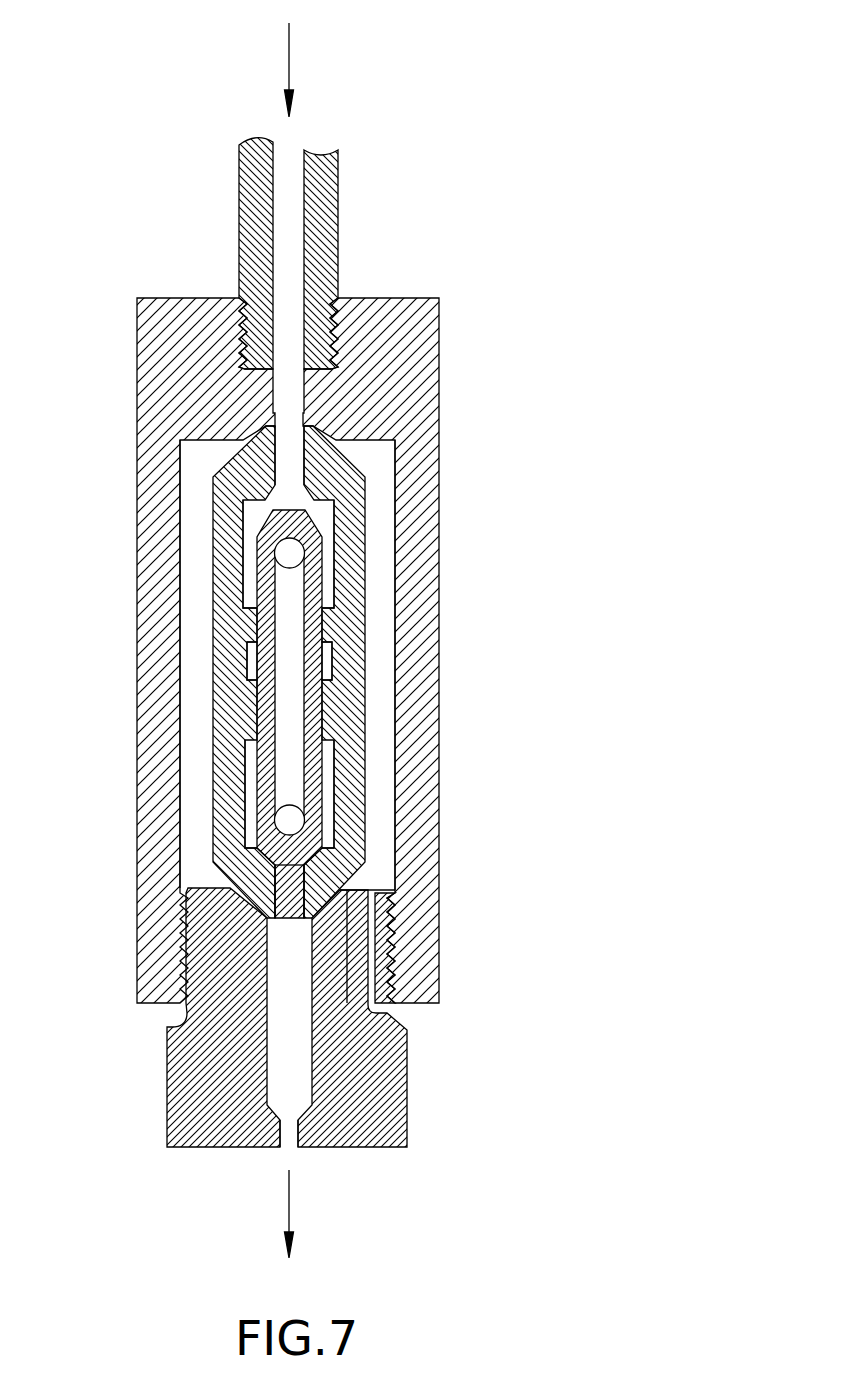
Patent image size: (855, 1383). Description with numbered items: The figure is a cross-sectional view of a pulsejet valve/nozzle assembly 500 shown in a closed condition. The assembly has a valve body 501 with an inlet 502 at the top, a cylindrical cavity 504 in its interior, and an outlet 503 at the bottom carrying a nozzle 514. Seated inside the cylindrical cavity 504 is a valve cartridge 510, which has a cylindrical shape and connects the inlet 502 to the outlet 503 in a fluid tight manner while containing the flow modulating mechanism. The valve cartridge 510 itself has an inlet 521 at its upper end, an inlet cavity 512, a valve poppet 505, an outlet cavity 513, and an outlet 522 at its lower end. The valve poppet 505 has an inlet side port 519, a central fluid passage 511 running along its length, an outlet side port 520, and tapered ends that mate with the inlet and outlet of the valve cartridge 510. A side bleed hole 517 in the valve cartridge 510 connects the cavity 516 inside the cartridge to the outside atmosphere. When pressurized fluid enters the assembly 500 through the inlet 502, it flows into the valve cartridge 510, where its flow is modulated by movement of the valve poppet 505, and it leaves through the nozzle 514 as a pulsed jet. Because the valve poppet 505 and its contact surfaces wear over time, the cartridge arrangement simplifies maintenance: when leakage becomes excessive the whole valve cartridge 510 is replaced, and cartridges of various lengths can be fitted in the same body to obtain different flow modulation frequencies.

The pulsejet valve/nozzle assembly 500 is at (412, 124).
The valve body 501 is at (417, 312).
The inlet 502 is at (288, 152).
The outlet 503 is at (383, 1078).
The cylindrical cavity 504 is at (385, 712).
The valve poppet 505 is at (313, 587).
The valve cartridge 510 is at (338, 466).
The central fluid passage 511 is at (290, 712).
The inlet cavity 512 is at (323, 511).
The outlet cavity 513 is at (325, 795).
The nozzle 514 is at (290, 1148).
The cavity 516 is at (247, 660).
The side bleed hole 517 is at (333, 648).
The inlet side port 519 is at (285, 553).
The outlet side port 520 is at (285, 820).
The inlet 521 is at (283, 462).
The outlet 522 is at (285, 895).